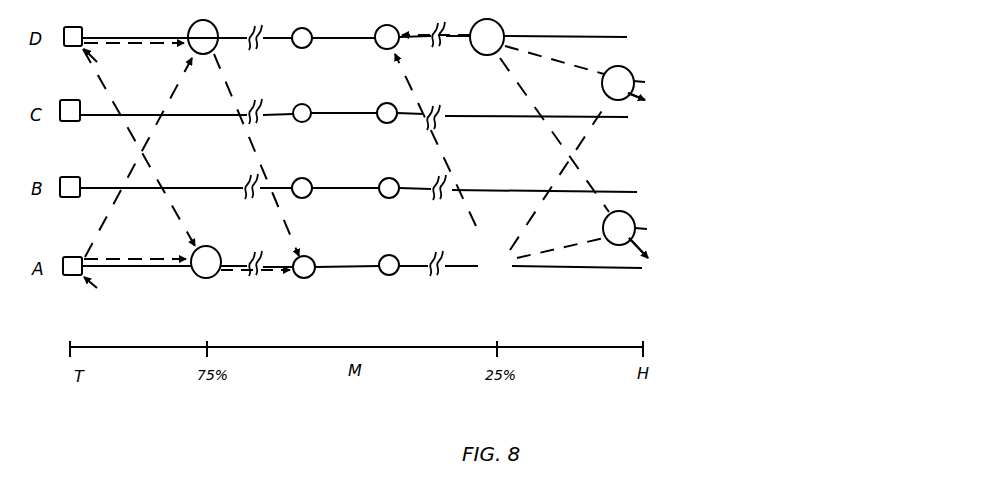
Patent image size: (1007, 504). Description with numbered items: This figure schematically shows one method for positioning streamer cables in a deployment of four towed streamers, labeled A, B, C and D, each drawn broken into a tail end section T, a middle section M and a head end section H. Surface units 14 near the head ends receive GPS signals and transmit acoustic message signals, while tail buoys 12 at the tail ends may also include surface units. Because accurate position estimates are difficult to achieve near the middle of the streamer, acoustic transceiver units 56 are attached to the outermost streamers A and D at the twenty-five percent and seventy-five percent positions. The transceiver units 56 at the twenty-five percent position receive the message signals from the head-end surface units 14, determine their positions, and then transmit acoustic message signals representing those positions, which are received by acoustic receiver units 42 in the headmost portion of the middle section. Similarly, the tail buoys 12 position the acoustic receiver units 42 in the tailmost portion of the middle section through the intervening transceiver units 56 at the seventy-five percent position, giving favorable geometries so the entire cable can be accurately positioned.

The tail buoy 12 is at (83, 27).
The acoustic transceiver unit 56 is at (497, 29).
The acoustic receiver unit 42 is at (375, 45).
The surface unit 14 is at (631, 70).